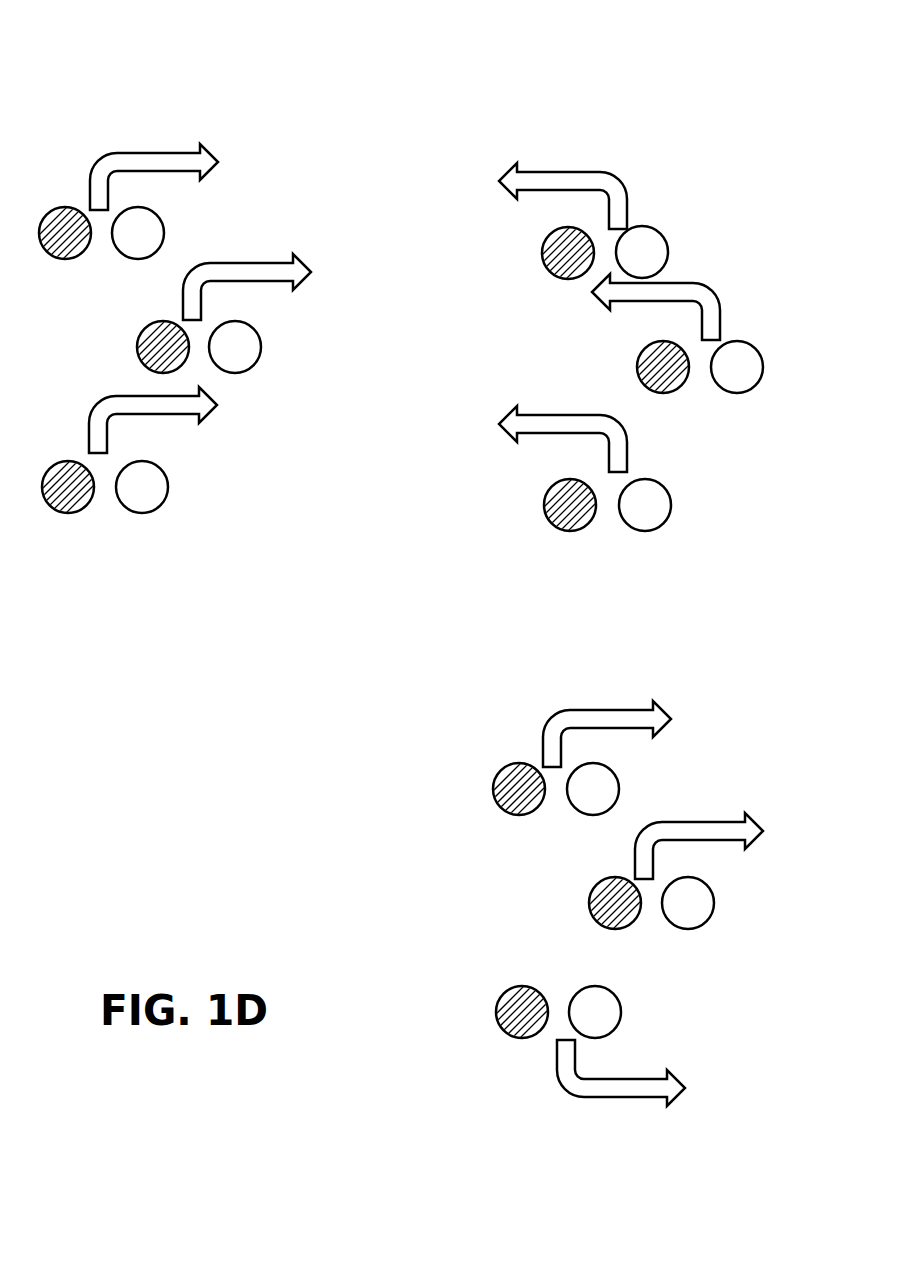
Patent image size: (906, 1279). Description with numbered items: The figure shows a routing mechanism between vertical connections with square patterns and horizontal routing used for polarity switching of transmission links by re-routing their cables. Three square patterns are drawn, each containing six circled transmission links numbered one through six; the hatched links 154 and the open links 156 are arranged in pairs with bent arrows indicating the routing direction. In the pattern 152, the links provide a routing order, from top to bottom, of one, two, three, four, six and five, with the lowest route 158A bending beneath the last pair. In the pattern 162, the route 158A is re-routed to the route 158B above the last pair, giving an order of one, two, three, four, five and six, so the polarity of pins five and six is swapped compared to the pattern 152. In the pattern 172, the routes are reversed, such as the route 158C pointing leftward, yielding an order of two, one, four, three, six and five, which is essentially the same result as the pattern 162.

The pattern 152 is at (508, 671).
The hatched (active) sub-pixel 154 is at (132, 340).
The open (inactive) sub-pixel 156 is at (145, 510).
The route 158A is at (597, 1100).
The route 158B is at (168, 425).
The route 158C is at (627, 450).
The pattern 162 is at (268, 90).
The pattern 172 is at (686, 90).